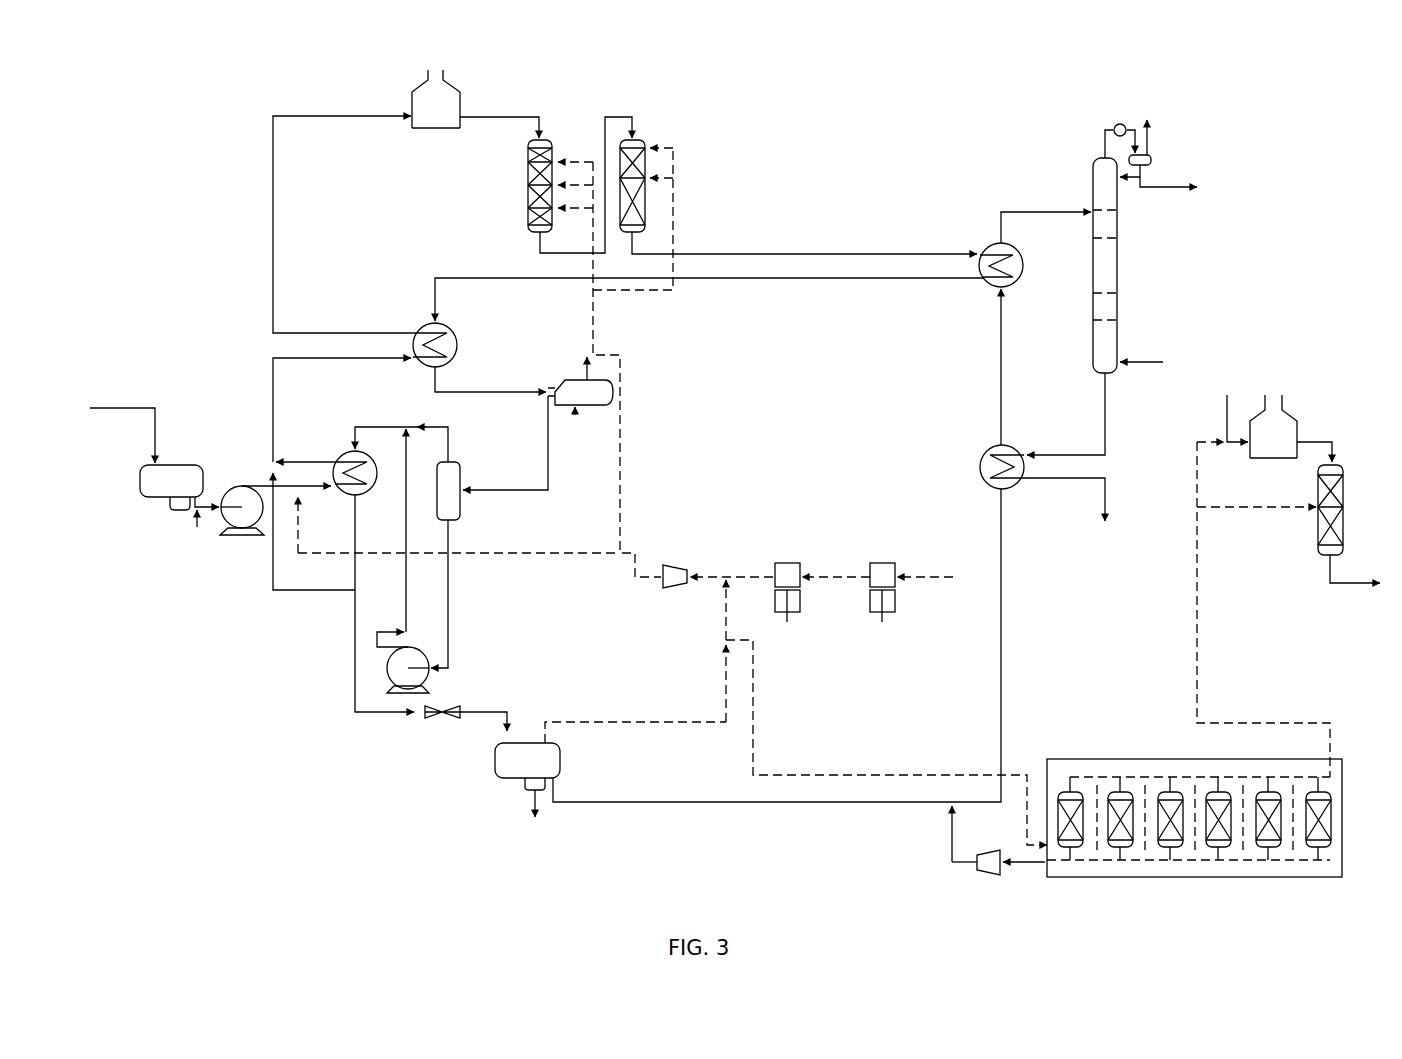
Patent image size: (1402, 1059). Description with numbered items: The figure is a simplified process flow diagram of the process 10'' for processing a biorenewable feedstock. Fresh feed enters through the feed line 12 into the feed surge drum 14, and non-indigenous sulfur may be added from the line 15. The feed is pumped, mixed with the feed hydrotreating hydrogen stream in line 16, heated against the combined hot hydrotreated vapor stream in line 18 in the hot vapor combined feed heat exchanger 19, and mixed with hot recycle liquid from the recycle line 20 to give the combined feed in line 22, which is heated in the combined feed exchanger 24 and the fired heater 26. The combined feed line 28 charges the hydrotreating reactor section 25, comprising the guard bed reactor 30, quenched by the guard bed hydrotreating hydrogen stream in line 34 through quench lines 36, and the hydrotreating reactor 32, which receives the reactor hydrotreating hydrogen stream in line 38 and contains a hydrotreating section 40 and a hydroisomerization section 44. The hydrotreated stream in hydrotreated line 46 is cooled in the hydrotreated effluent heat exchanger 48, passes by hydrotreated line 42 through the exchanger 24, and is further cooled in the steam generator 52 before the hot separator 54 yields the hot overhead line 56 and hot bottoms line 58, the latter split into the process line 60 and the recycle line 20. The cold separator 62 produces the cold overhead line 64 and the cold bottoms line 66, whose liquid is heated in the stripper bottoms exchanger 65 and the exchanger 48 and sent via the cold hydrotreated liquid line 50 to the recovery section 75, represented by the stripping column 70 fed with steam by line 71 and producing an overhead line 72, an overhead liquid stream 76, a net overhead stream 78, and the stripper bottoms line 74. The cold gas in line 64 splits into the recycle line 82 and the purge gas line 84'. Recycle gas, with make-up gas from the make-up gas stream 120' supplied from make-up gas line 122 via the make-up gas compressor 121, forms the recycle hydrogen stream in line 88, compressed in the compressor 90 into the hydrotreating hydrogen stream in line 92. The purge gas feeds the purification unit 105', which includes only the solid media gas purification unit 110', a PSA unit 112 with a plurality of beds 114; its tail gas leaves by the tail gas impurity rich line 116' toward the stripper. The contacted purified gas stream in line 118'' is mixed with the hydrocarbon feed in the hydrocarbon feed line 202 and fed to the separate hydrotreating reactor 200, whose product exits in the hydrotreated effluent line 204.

The process 10'' is at (115, 221).
The feed line 12 is at (120, 416).
The feed surge drum 14 is at (188, 465).
The line 15 is at (197, 527).
The feed hydrotreating hydrogen stream line 16 is at (495, 553).
The combined hot hydrotreated vapor stream line 18 is at (395, 427).
The hot vapor combined feed heat exchanger 19 is at (348, 497).
The recycle line 20 is at (298, 592).
The combined biorenewable feed stream line 22 is at (272, 400).
The combined feed exchanger 24 is at (450, 328).
The hydrotreating reactor section 25 is at (703, 138).
The fired heater 26 is at (412, 102).
The combined feed line 28 is at (528, 117).
The guard bed reactor 30 is at (528, 185).
The hydrotreating reactor 32 is at (638, 136).
The guard bed hydrotreating hydrogen stream line 34 is at (593, 288).
The quench lines 36 is at (550, 253).
The reactor hydrotreating hydrogen stream line 38 is at (673, 245).
The hydrotreating section 40 is at (660, 160).
The hydrotreated line 42 is at (458, 278).
The hydroisomerization section 44 is at (663, 195).
The hydrotreated line 46 is at (815, 254).
The hydrotreated effluent heat exchanger 48 is at (1023, 265).
The cold hydrotreated liquid line 50 is at (1001, 325).
The steam generator 52 is at (604, 405).
The hot separator 54 is at (458, 462).
The hot overhead line 56 is at (448, 432).
The hot bottoms line 58 is at (448, 620).
The process line 60 is at (406, 565).
The cold separator 62 is at (495, 770).
The cold overhead line 64 is at (618, 722).
The stripper bottoms exchanger 65 is at (982, 455).
The cold bottoms line 66 is at (652, 802).
The stripping column 70 is at (1117, 252).
The line 71 is at (1145, 362).
The overhead line 72 is at (1105, 134).
The stripper bottoms line 74 is at (1105, 400).
The recovery section 75 is at (1016, 170).
The overhead liquid stream 76 is at (1172, 190).
The net overhead stream 78 is at (1158, 158).
The recycle line 82 is at (722, 590).
The purge gas line 84' is at (878, 742).
The recycle hydrogen stream line 88 is at (712, 575).
The compressor 90 is at (672, 590).
The hydrotreating hydrogen stream line 92 is at (620, 577).
The purification unit 105' is at (1352, 658).
The solid media gas purification unit 110' is at (1097, 724).
The PSA unit 112 is at (1248, 759).
The beds 114 is at (1310, 860).
The tail gas impurity rich line 116' is at (999, 859).
The contacted purified gas stream line 118'' is at (1241, 609).
The make-up gas stream 120' is at (796, 560).
The make-up gas compressor 121 is at (870, 600).
The make-up gas line 122 is at (930, 577).
The hydrotreating reactor 200 is at (1343, 470).
The hydrocarbon feed line 202 is at (1227, 410).
The hydrotreated effluent line 204 is at (1330, 575).